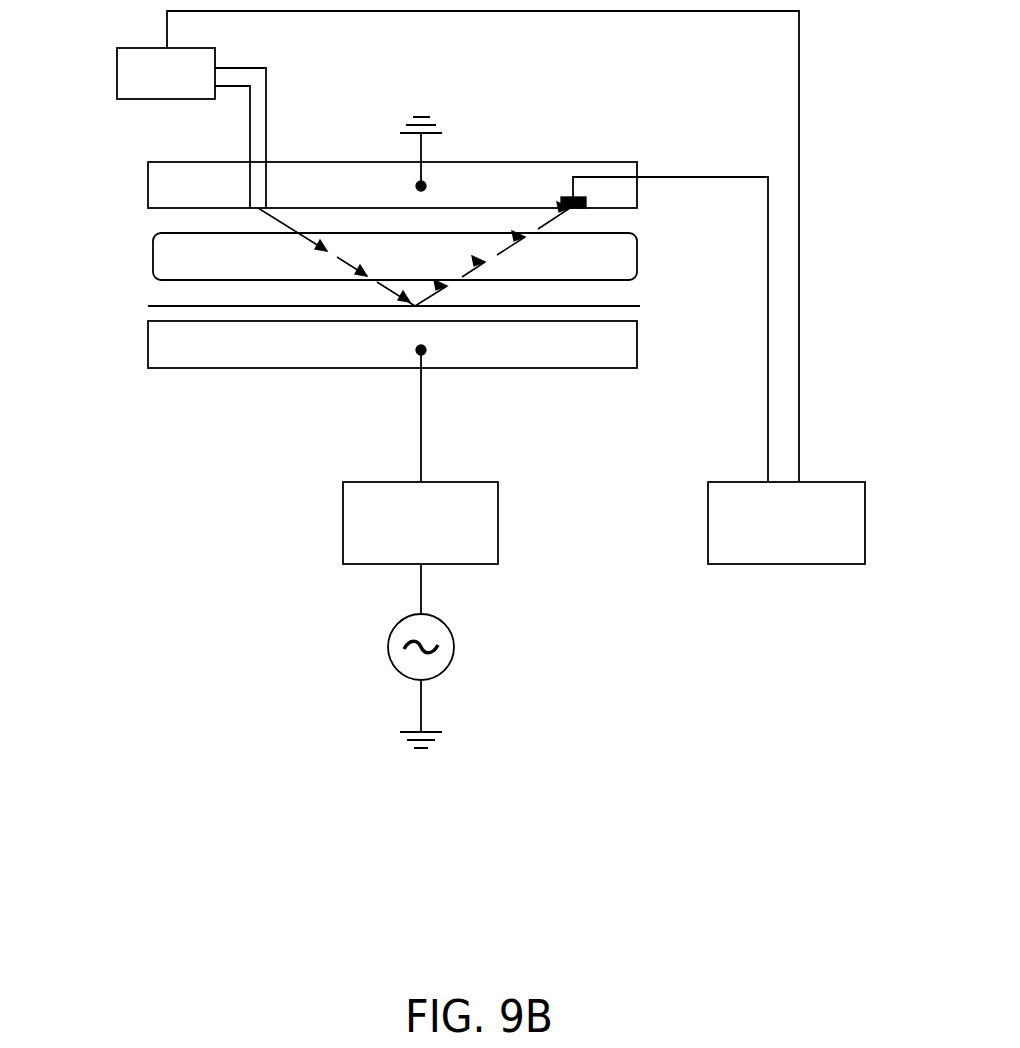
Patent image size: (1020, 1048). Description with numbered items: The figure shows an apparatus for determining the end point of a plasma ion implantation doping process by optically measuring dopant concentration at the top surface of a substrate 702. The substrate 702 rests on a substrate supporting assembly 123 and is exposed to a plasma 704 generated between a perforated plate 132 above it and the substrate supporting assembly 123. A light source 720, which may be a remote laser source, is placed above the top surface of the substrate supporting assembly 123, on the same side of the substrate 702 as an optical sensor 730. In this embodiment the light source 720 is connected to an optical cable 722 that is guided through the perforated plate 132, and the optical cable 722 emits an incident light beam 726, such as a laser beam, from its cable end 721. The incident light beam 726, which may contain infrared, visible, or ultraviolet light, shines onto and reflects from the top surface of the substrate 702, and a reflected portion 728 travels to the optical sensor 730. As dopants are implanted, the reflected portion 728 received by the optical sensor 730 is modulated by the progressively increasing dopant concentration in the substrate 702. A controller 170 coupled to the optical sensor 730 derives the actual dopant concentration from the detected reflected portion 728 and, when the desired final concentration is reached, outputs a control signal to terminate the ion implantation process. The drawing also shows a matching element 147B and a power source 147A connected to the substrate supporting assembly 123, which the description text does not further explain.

The light source 720 is at (190, 86).
The optical cable 722 is at (240, 67).
The cable end 721 is at (258, 208).
The perforated plate 132 is at (226, 197).
The plasma 704 is at (226, 266).
The substrate 702 is at (633, 306).
The substrate supporting assembly 123 is at (226, 356).
The optical sensor 730 is at (560, 198).
The incident light beam 726 is at (342, 258).
The reflected portion 728 is at (497, 255).
The matching network 147B is at (343, 519).
The RF power source 147A is at (388, 645).
The controller 170 is at (708, 512).